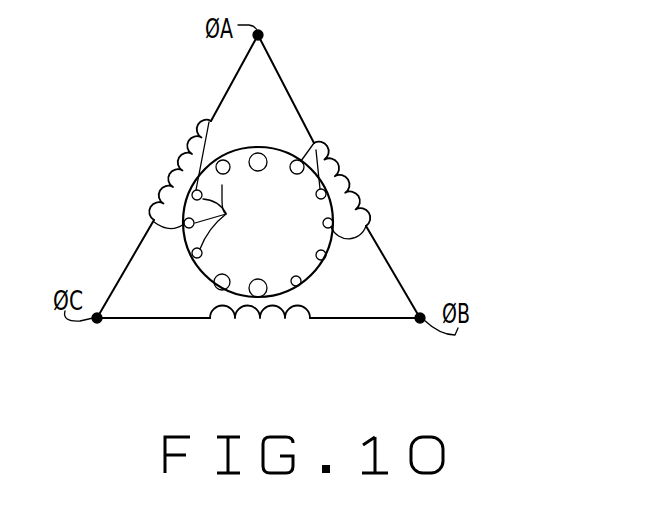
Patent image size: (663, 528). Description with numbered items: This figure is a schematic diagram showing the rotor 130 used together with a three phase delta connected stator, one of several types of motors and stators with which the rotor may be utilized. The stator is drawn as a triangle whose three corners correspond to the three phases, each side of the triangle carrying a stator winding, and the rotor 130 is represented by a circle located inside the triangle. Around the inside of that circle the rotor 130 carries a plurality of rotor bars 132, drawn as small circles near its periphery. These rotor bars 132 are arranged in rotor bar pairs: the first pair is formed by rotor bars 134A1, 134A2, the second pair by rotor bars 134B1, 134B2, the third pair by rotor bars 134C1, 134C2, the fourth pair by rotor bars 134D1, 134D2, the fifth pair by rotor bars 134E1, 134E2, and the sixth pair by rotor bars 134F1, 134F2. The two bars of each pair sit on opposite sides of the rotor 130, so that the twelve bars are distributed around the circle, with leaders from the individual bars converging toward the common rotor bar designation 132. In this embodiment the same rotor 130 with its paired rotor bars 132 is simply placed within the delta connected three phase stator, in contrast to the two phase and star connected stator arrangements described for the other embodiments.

The rotor 130 is at (296, 225).
The rotor bars 132 is at (234, 217).
The rotor bar 134A1 is at (261, 153).
The rotor bar 134A2 is at (251, 295).
The rotor bar 134B1 is at (222, 185).
The rotor bar 134B2 is at (300, 284).
The rotor bar 134C1 is at (188, 166).
The rotor bar 134C2 is at (325, 259).
The rotor bar 134D1 is at (154, 224).
The rotor bar 134D2 is at (368, 229).
The rotor bar 134E1 is at (193, 256).
The rotor bar 134E2 is at (334, 182).
The rotor bar 134F1 is at (218, 290).
The rotor bar 134F2 is at (315, 142).